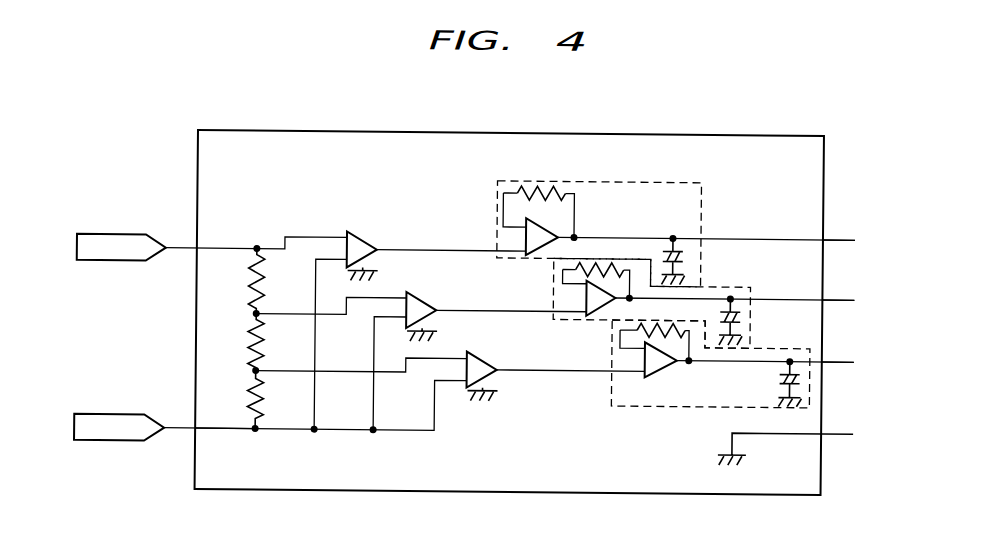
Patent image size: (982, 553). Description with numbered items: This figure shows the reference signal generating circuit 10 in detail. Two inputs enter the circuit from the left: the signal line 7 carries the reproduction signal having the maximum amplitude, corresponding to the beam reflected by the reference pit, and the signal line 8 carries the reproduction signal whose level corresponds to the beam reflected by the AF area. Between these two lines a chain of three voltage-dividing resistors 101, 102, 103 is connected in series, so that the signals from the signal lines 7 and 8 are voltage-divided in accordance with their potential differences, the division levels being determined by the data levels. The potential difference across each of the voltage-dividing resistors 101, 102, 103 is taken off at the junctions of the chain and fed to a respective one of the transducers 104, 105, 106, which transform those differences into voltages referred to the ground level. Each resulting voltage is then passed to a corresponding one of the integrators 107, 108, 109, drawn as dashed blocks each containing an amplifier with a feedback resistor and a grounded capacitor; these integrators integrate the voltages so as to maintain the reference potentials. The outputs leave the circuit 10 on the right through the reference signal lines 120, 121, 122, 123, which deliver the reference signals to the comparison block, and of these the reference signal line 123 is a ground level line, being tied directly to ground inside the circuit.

The signal line 7 is at (80, 248).
The signal line 8 is at (77, 428).
The reference signal generating circuit 10 is at (787, 130).
The voltage-dividing resistor 101 is at (235, 281).
The voltage-dividing resistor 102 is at (235, 342).
The voltage-dividing resistor 103 is at (234, 399).
The transducer 104 is at (369, 239).
The transducer 105 is at (429, 303).
The transducer 106 is at (489, 363).
The integrator 107 is at (629, 176).
The integrator 108 is at (741, 280).
The integrator 109 is at (770, 342).
The reference signal line 120 is at (841, 234).
The reference signal line 121 is at (839, 296).
The reference signal line 122 is at (839, 357).
The reference signal line 123 is at (839, 428).